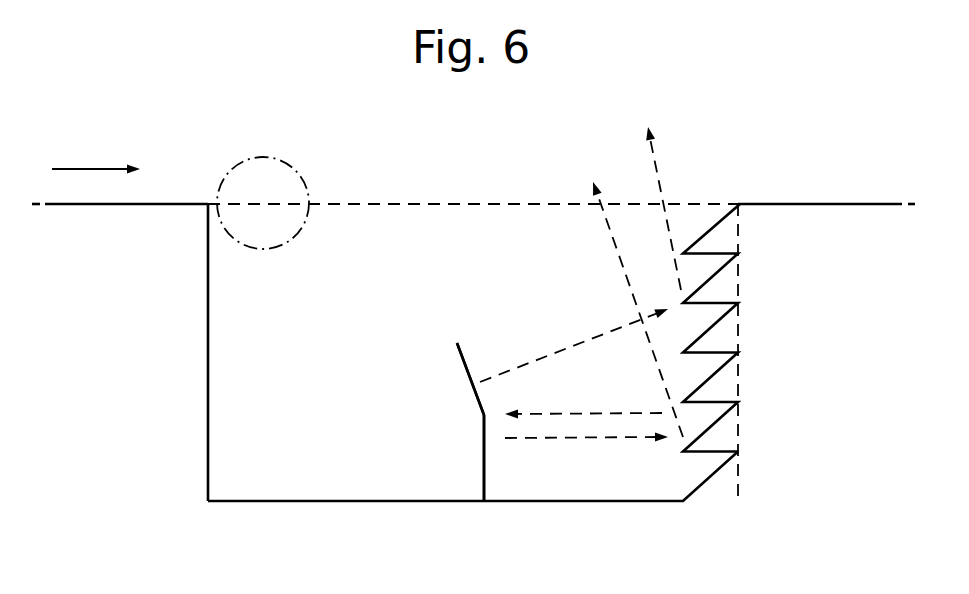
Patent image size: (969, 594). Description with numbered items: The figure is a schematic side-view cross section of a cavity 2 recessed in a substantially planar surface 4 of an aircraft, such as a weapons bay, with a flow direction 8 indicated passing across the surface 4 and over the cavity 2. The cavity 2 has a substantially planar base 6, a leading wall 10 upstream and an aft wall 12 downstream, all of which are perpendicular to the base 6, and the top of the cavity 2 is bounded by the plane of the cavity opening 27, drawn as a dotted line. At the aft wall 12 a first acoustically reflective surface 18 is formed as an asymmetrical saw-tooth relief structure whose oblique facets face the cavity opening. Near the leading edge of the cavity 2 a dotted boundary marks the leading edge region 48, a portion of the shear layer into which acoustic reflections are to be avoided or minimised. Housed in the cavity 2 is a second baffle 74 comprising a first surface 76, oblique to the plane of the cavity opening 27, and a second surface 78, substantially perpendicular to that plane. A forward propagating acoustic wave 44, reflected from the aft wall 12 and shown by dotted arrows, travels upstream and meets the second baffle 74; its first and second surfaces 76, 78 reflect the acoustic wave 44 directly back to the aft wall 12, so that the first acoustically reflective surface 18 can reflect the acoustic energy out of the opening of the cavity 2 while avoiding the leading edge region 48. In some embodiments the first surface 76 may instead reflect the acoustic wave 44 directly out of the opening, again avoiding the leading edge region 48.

The cavity 2 is at (383, 248).
The surface 4 is at (105, 206).
The planar base 6 is at (588, 503).
The flow direction 8 is at (88, 168).
The leading wall 10 is at (207, 338).
The aft wall 12 is at (740, 430).
The first acoustically reflective surface 18 is at (703, 218).
The plane of the cavity opening 27 is at (437, 203).
The reflected acoustic wave 44 is at (607, 222).
The leading edge region 48 is at (258, 248).
The second baffle 74 is at (452, 401).
The first surface 76 is at (463, 363).
The second surface 78 is at (484, 470).